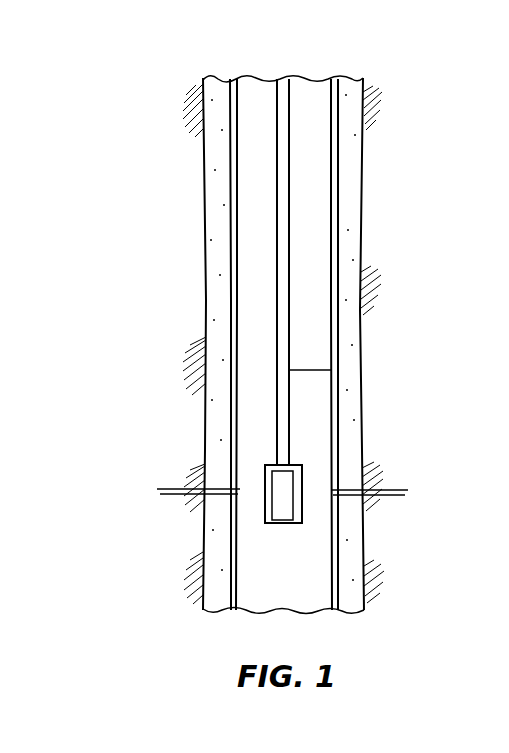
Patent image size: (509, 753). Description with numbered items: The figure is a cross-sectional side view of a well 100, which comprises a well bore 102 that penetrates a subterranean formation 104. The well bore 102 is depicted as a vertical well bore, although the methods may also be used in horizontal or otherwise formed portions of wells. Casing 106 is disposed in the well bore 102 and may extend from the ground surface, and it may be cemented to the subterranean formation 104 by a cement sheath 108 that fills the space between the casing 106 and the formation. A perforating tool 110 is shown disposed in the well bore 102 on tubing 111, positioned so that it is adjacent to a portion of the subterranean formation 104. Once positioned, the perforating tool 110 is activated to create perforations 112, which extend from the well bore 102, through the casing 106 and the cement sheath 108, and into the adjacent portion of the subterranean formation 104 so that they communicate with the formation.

The well 100 is at (181, 68).
The well bore 102 is at (352, 166).
The subterranean formation 104 is at (180, 320).
The casing 106 is at (343, 212).
The cement sheath 108 is at (349, 187).
The perforating tool 110 is at (303, 470).
The tubing 111 is at (332, 369).
The perforations 112 is at (173, 489).